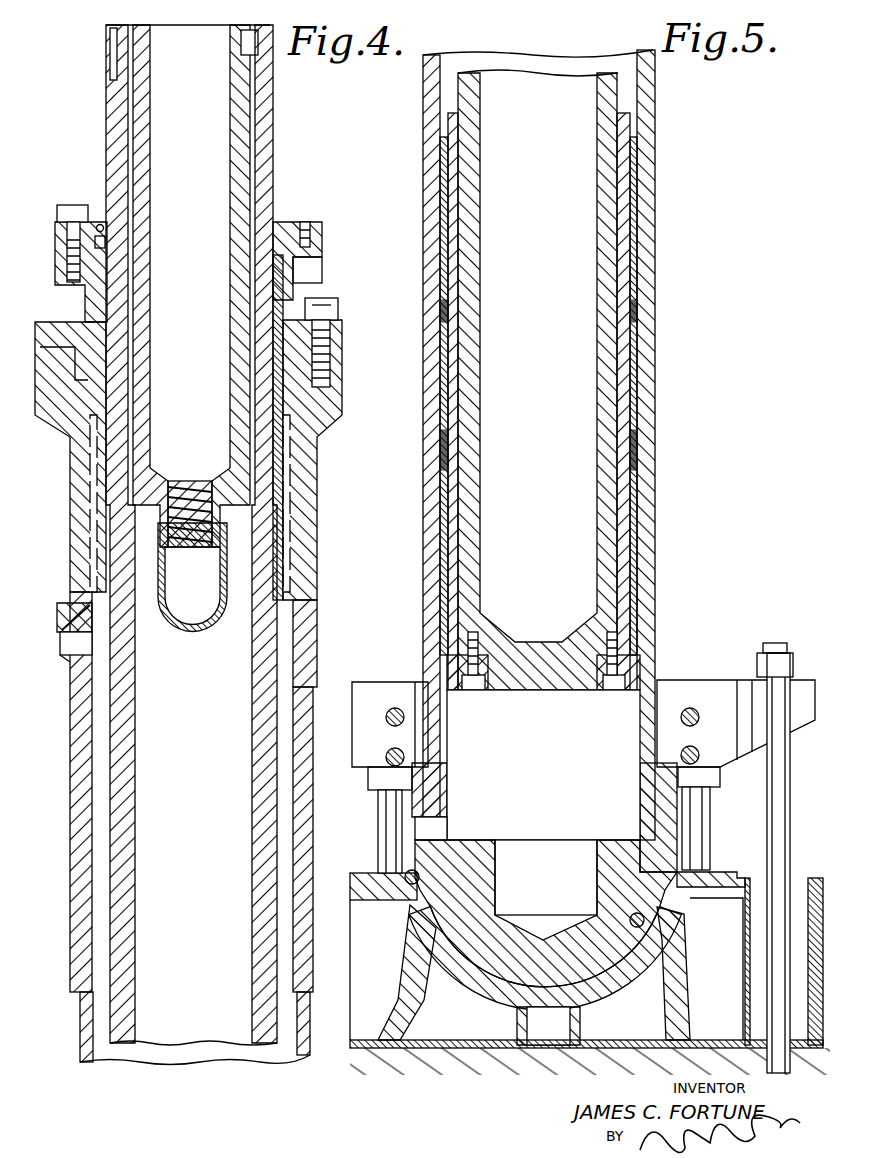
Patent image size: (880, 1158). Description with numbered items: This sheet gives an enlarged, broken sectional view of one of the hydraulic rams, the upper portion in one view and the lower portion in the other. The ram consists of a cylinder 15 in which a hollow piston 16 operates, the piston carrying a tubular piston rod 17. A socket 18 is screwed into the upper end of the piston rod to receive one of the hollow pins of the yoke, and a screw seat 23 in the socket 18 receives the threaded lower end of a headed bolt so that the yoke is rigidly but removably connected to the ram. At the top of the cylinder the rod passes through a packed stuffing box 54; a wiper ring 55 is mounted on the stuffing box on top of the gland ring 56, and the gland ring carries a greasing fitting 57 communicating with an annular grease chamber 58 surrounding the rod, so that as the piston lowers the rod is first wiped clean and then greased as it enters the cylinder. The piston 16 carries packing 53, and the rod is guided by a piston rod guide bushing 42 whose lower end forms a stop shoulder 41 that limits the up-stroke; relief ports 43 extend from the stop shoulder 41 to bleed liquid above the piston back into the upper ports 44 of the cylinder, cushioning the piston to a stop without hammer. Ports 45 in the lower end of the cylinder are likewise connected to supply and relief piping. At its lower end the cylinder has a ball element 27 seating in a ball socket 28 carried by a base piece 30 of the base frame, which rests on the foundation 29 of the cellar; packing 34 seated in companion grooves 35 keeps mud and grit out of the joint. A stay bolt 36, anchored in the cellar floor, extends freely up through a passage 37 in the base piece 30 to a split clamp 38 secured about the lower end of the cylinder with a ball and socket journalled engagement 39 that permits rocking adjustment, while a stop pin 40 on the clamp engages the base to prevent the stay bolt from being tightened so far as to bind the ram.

In FIG. 4, the cylinder 15 is at (84, 1034).
In FIG. 5, the cylinder 15 is at (650, 148).
In FIG. 5, the hollow piston 16 is at (626, 523).
In FIG. 4, the tubular piston rod 17 is at (136, 843).
In FIG. 5, the tubular piston rod 17 is at (464, 95).
In FIG. 4, the socket 18 is at (242, 170).
In FIG. 4, the screw seat 23 is at (226, 503).
In FIG. 5, the ball element 27 is at (494, 972).
In FIG. 5, the ball socket 28 is at (599, 971).
In FIG. 5, the foundation 29 is at (386, 1062).
In FIG. 5, the base piece 30 is at (722, 878).
In FIG. 5, the packing 34 is at (408, 886).
In FIG. 5, the groove 35 is at (666, 896).
In FIG. 5, the stay bolt 36 is at (778, 785).
In FIG. 5, the passage 37 is at (796, 880).
In FIG. 5, the split clamp 38 is at (671, 682).
In FIG. 5, the ball and socket journalled engagement 39 is at (662, 777).
In FIG. 5, the stop pin 40 is at (705, 827).
In FIG. 4, the stop shoulder 41 is at (312, 608).
In FIG. 4, the piston rod guide bushing 42 is at (97, 520).
In FIG. 4, the relief port 43 is at (70, 606).
In FIG. 4, the upper port 44 is at (72, 660).
In FIG. 5, the lower port 45 is at (432, 825).
In FIG. 5, the packing 53 is at (640, 438).
In FIG. 4, the stuffing box 54 is at (293, 283).
In FIG. 4, the wiper ring 55 is at (104, 221).
In FIG. 4, the gland ring 56 is at (323, 242).
In FIG. 4, the greasing fitting 57 is at (308, 232).
In FIG. 4, the annular grease chamber 58 is at (64, 256).